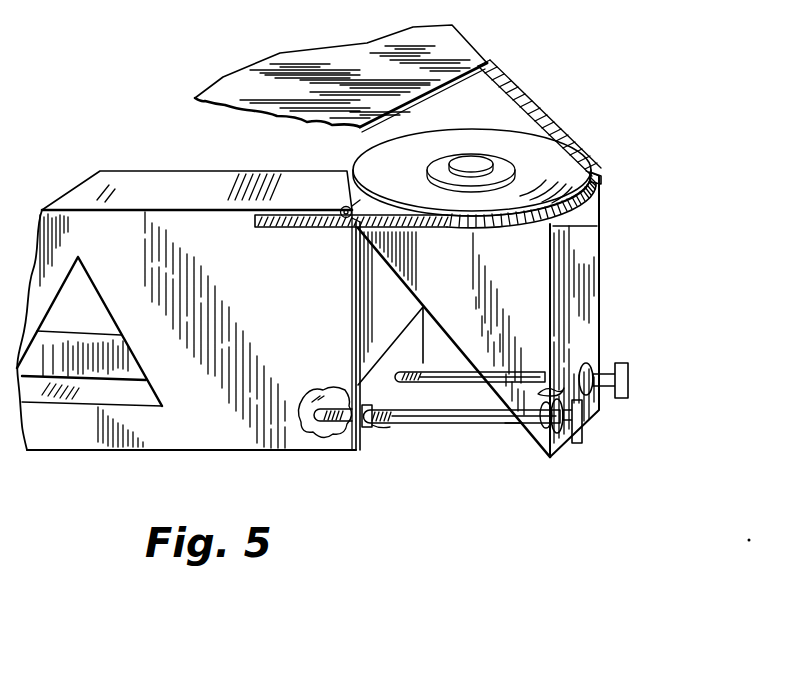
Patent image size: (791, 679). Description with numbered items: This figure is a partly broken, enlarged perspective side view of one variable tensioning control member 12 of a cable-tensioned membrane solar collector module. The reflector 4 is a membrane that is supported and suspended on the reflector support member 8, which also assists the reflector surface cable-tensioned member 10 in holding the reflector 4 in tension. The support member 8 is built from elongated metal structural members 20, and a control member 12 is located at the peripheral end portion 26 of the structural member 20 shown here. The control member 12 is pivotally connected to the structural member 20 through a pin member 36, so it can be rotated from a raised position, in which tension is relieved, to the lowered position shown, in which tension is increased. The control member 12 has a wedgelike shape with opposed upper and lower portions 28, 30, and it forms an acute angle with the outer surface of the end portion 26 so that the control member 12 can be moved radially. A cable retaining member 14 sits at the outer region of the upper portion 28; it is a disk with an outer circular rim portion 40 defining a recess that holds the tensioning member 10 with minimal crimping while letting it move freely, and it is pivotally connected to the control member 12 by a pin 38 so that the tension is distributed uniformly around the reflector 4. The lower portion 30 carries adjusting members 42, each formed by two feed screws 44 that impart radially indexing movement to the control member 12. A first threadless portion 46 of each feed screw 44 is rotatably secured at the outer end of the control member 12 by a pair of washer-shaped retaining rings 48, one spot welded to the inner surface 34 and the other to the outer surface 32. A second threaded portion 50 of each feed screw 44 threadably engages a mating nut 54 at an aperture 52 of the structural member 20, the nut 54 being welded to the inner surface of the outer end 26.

The reflector 4 is at (216, 76).
The reflector support member 8 is at (141, 168).
The reflector surface cable-tensioned member 10 is at (503, 81).
The variable tensioning control member 12 is at (614, 228).
The cable retaining member 14 is at (398, 186).
The structural member 20 is at (280, 288).
The peripheral end portion 26 is at (432, 392).
The upper portion 28 is at (603, 176).
The lower portion 30 is at (552, 458).
The outer surface 32 is at (596, 285).
The inner surface 34 is at (523, 394).
The pin member 36 is at (342, 210).
The pin 38 is at (503, 157).
The rim portion 40 is at (338, 178).
The adjusting member 42 is at (513, 444).
The feed screw 44 is at (623, 371).
The first threadless portion 46 is at (460, 378).
The retaining ring 48 is at (589, 363).
The second threaded portion 50 is at (386, 426).
The aperture 52 is at (376, 437).
The nut 54 is at (335, 430).